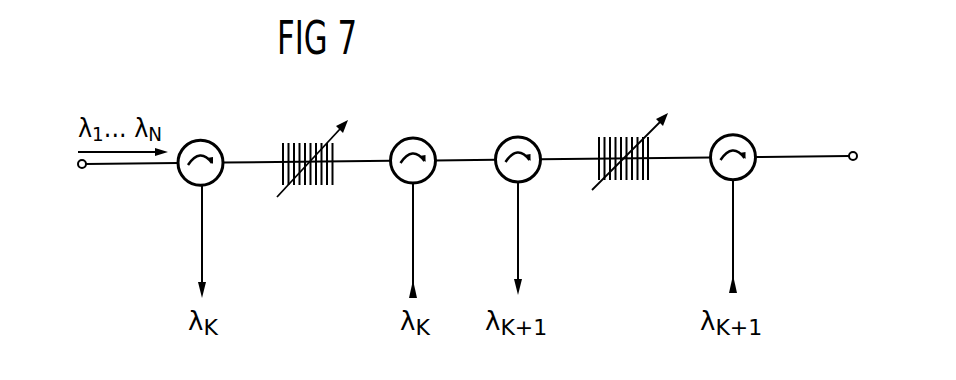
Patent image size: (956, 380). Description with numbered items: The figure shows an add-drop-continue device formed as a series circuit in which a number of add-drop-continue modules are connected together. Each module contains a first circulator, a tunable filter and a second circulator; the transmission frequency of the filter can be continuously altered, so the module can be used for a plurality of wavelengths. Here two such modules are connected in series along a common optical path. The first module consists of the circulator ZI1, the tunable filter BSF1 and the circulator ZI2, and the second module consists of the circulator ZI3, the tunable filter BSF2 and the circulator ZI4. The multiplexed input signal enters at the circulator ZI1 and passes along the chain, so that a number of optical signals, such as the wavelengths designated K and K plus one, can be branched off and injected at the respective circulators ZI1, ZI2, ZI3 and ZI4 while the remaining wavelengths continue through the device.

The first circulator ZI1 is at (202, 140).
The second circulator ZI2 is at (413, 137).
The circulator ZI3 is at (518, 137).
The circulator ZI4 is at (733, 132).
The tunable filter BSF1 is at (310, 185).
The tunable filter BSF2 is at (627, 180).